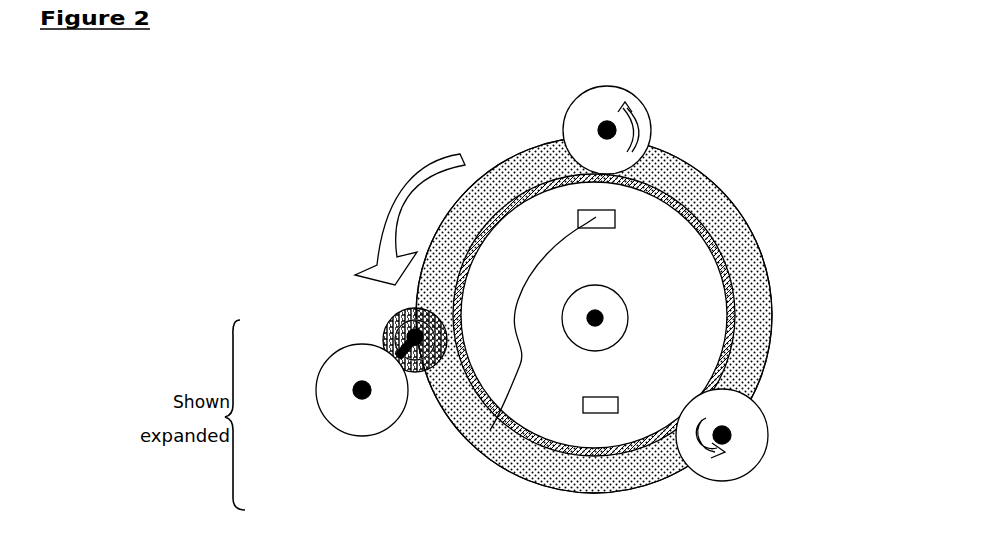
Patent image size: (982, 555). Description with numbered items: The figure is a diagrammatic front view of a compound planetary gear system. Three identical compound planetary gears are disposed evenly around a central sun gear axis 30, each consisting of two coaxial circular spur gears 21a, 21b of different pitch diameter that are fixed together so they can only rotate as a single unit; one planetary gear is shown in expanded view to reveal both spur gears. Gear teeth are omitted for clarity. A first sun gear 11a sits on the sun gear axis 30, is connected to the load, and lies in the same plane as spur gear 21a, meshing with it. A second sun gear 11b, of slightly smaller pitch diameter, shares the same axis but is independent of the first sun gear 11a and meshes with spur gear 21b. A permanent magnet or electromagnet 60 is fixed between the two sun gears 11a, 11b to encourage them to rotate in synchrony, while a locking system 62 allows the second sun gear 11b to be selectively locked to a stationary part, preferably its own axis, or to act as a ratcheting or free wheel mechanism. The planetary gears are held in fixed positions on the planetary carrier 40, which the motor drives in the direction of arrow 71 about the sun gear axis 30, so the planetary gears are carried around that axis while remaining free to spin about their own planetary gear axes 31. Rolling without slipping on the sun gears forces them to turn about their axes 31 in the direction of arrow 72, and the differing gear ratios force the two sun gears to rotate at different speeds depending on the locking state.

The first sun gear 11a is at (648, 150).
The second sun gear 11b is at (547, 245).
The circular spur gear 21a is at (390, 317).
The circular spur gear 21b is at (353, 412).
The sun gear axis 30 is at (597, 312).
The planetary gear axis 31 is at (355, 387).
The planetary carrier 40 is at (767, 368).
The permanent magnet or electromagnet 60 is at (596, 402).
The locking system 62 is at (613, 327).
The arrow 71 is at (402, 190).
The arrow 72 is at (641, 103).